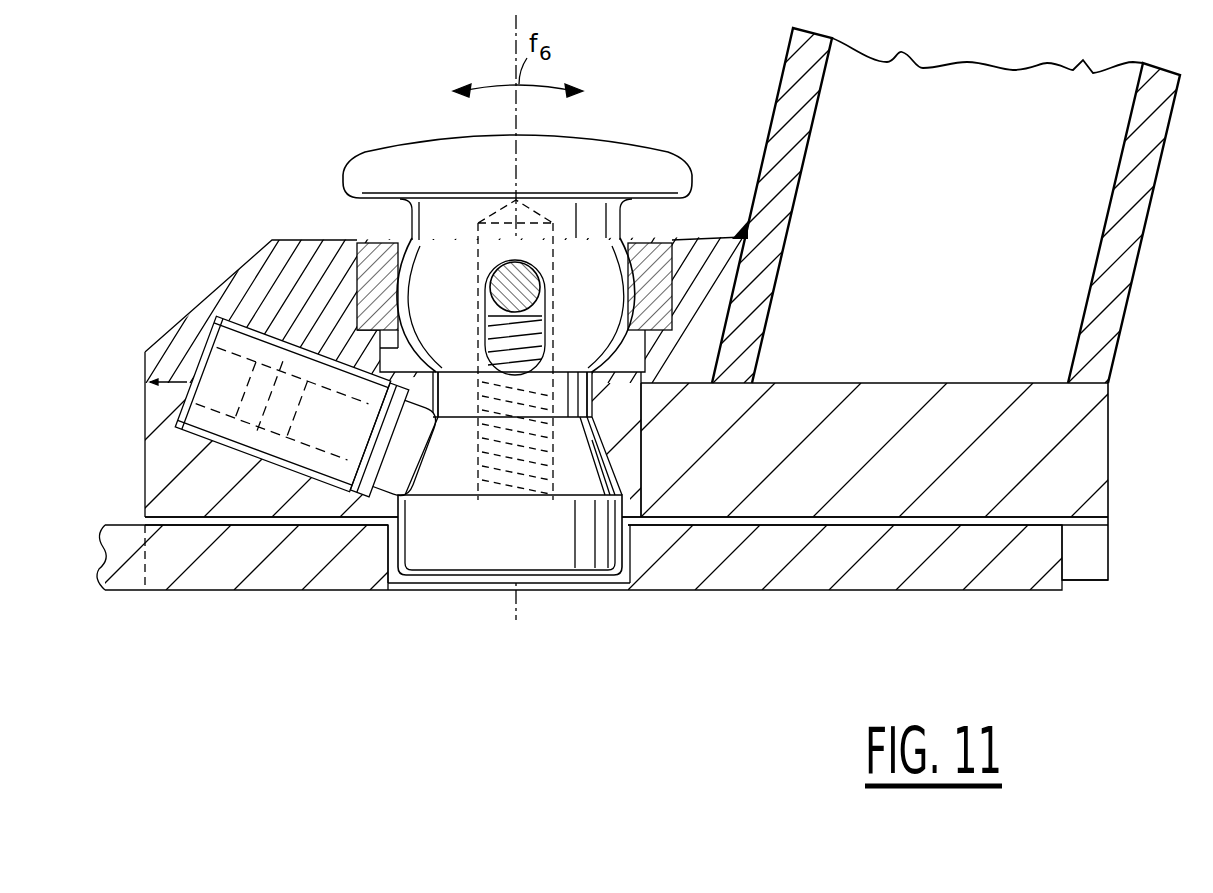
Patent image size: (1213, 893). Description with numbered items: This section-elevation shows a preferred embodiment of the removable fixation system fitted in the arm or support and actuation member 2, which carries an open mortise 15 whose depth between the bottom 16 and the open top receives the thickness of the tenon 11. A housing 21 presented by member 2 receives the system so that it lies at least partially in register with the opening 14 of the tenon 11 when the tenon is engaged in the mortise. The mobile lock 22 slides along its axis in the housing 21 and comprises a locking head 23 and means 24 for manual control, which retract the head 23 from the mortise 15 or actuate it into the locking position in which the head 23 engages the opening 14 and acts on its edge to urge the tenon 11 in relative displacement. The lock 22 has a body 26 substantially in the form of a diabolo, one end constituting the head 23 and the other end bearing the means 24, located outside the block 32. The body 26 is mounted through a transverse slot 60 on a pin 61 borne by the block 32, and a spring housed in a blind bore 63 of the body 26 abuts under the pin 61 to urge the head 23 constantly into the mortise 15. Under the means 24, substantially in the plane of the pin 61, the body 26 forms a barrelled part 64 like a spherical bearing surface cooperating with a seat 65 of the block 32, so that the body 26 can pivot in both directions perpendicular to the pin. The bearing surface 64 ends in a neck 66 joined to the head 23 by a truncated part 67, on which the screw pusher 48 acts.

The arm or support and actuation member 2 is at (1103, 437).
The tenon 11 is at (877, 592).
The opening 14 is at (633, 570).
The open mortise 15 is at (1082, 564).
The bottom of the mortise 16 is at (1110, 535).
The housing 21 is at (652, 437).
The lock 22 is at (439, 549).
The locking head 23 is at (567, 563).
The means 24 is at (625, 158).
The body 26 is at (596, 399).
The block 32 is at (660, 240).
The screw pusher 48 is at (213, 330).
The transverse slot 60 is at (543, 273).
The pin 61 is at (492, 268).
The blind bore 63 is at (500, 500).
The barrelled part 64 is at (380, 348).
The seat 65 is at (384, 270).
The neck 66 is at (456, 404).
The truncated part 67 is at (658, 462).